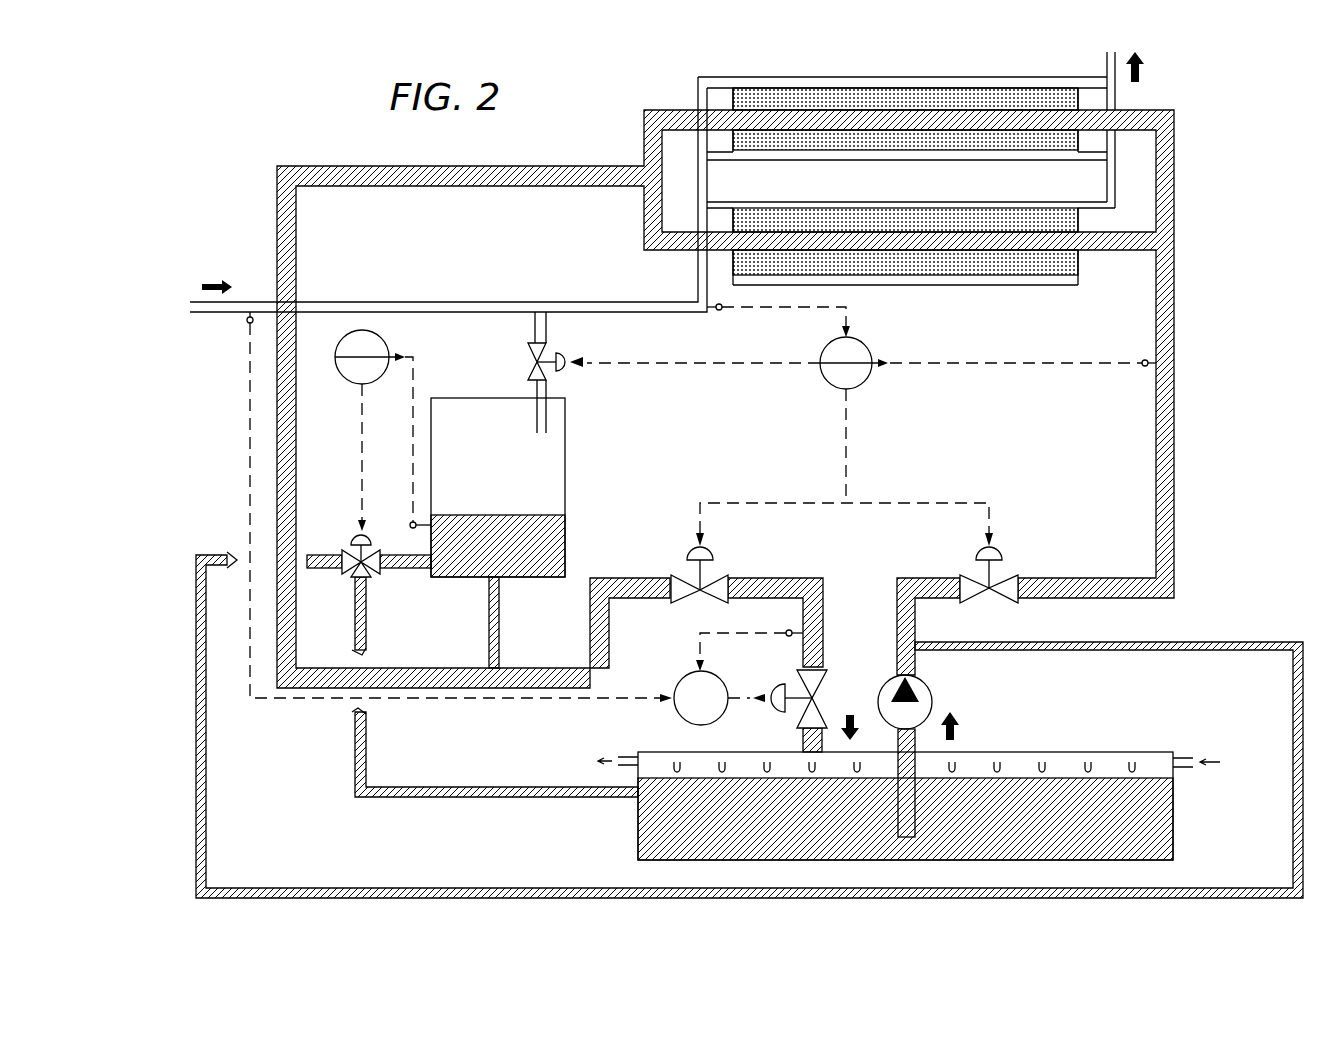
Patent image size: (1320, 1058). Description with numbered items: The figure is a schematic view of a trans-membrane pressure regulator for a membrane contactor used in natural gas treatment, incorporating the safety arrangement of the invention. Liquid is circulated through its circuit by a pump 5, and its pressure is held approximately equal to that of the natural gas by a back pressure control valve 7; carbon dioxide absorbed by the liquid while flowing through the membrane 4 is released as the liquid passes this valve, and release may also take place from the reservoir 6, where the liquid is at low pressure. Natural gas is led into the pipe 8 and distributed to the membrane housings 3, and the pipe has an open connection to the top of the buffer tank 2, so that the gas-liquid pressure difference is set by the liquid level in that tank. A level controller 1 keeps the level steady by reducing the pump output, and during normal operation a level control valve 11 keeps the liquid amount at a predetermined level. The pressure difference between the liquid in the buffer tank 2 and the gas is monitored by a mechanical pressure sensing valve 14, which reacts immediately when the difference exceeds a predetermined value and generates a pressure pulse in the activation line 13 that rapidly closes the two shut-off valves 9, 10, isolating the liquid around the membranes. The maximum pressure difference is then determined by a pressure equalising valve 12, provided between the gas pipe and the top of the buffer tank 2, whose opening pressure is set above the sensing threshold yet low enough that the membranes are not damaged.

The level controller 1 is at (386, 345).
The buffer tank 2 is at (566, 497).
The membrane housings 3 is at (735, 196).
The membrane 4 is at (840, 212).
The pump 5 is at (927, 690).
The reservoir 6 is at (638, 820).
The back pressure control valve 7 is at (680, 712).
The pipe 8 is at (250, 302).
The shut-off valve 9 is at (1018, 575).
The shut-off valve 10 is at (727, 575).
The level control valve 11 is at (355, 537).
The pressure equalising valve 12 is at (565, 355).
The activation line 13 is at (900, 502).
The pressure sensing valve 14 is at (868, 345).